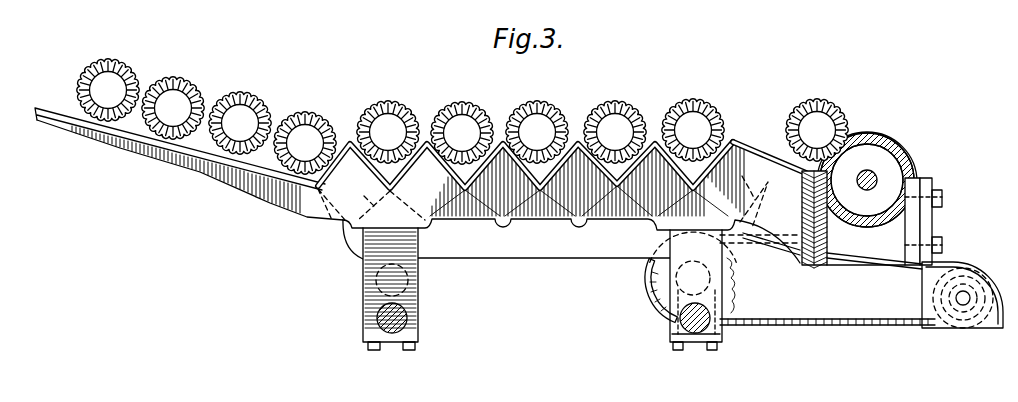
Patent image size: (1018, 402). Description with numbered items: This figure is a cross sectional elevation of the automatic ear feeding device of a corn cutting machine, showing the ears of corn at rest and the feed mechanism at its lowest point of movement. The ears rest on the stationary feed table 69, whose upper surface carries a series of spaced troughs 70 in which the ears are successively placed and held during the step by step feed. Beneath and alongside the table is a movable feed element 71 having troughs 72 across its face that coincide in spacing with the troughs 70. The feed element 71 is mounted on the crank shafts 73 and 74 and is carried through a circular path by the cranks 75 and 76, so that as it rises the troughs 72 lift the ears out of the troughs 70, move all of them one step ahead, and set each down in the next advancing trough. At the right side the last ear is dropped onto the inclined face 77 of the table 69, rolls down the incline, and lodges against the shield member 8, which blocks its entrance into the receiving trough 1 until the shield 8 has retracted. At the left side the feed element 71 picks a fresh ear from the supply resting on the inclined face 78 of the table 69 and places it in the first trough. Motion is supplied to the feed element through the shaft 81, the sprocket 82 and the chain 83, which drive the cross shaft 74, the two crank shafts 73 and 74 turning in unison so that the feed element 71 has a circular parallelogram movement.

The receiving trough 1 is at (918, 180).
The shield member 8 is at (893, 148).
The stationary feed table 69 is at (308, 213).
The spaced troughs 70 is at (556, 216).
The movable feed element 71 is at (606, 248).
The troughs of the feed element 72 is at (555, 198).
The crank shaft 73 is at (418, 279).
The crank shaft 74 is at (650, 284).
The crank 75 is at (401, 343).
The crank 76 is at (703, 338).
The inclined face 77 is at (743, 141).
The inclined face 78 is at (203, 178).
The shaft 81 is at (963, 306).
The sprocket 82 is at (940, 322).
The chain 83 is at (834, 319).